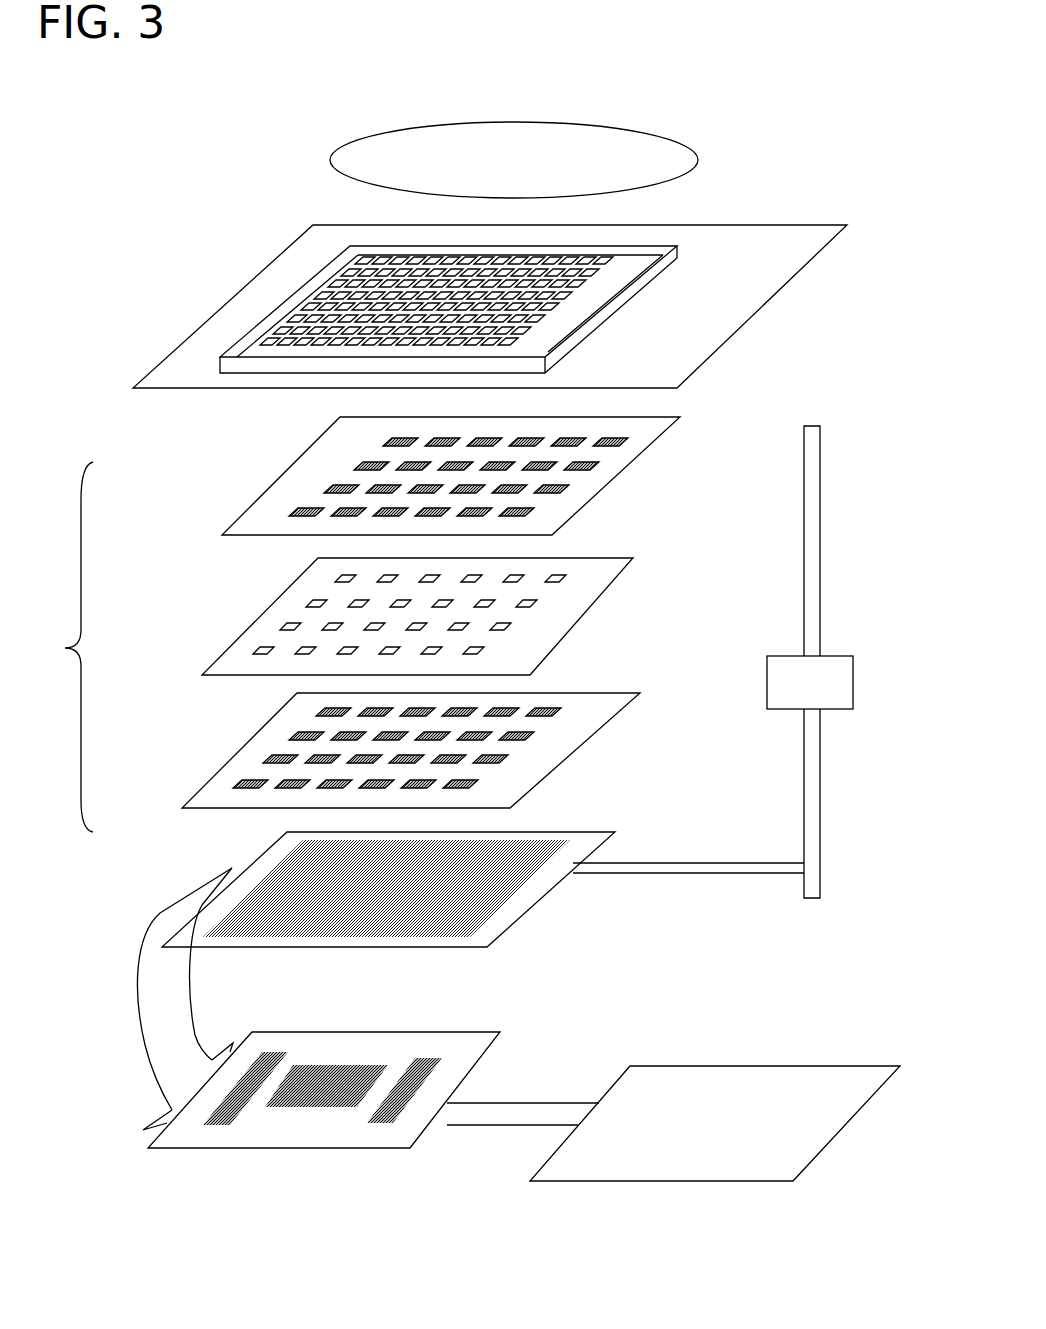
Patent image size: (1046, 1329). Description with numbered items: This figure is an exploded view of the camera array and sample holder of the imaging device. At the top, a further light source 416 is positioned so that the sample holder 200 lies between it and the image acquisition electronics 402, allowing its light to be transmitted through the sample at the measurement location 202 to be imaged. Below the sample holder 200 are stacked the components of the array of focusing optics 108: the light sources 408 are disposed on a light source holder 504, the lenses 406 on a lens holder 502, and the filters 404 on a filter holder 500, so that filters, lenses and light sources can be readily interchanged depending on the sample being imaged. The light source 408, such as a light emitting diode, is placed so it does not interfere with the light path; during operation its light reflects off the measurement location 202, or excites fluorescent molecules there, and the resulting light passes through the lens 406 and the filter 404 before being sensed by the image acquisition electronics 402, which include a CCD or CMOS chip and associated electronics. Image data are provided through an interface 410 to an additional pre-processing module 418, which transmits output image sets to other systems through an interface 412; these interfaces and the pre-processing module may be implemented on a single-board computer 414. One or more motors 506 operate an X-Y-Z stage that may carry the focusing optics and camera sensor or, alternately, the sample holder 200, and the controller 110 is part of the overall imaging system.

The array of focusing optics 108 is at (65, 648).
The controller 110 is at (633, 1183).
The sample holder 200 is at (217, 388).
The measurement location 202 is at (302, 355).
The image acquisition electronics 402 is at (300, 852).
The filter 404 is at (288, 748).
The lens 406 is at (302, 617).
The light source 408 is at (328, 503).
The interface 410 is at (213, 1128).
The interface 412 is at (378, 1125).
The single-board computer 414 is at (382, 1040).
The further light source 416 is at (575, 122).
The additional pre-processing module 418 is at (310, 1110).
The filter holder 500 is at (548, 745).
The lens holder 502 is at (578, 592).
The light source holder 504 is at (565, 497).
The motor 506 is at (828, 656).